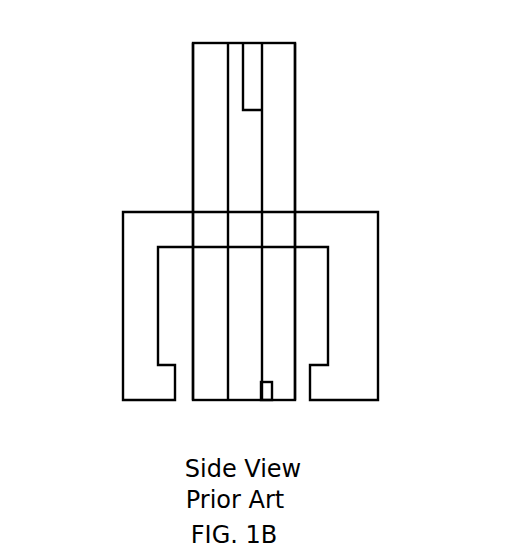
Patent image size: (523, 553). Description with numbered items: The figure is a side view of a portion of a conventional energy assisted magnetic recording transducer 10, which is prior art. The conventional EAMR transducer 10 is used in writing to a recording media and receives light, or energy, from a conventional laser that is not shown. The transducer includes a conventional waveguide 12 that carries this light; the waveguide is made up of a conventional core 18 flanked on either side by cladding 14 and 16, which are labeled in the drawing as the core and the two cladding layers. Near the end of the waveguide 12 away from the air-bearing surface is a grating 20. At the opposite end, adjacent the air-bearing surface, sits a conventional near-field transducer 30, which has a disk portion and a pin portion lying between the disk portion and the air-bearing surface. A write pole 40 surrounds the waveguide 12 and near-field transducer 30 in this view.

The conventional energy assisted magnetic recording (EAMR) transducer 10 is at (40, 37).
The conventional waveguide 12 is at (322, 195).
The cladding 14 is at (295, 195).
The cladding 16 is at (192, 205).
The conventional core 18 is at (263, 157).
The grating 20 is at (243, 76).
The conventional near-field transducer (NFT) 30 is at (265, 400).
The write pole 40 is at (378, 347).